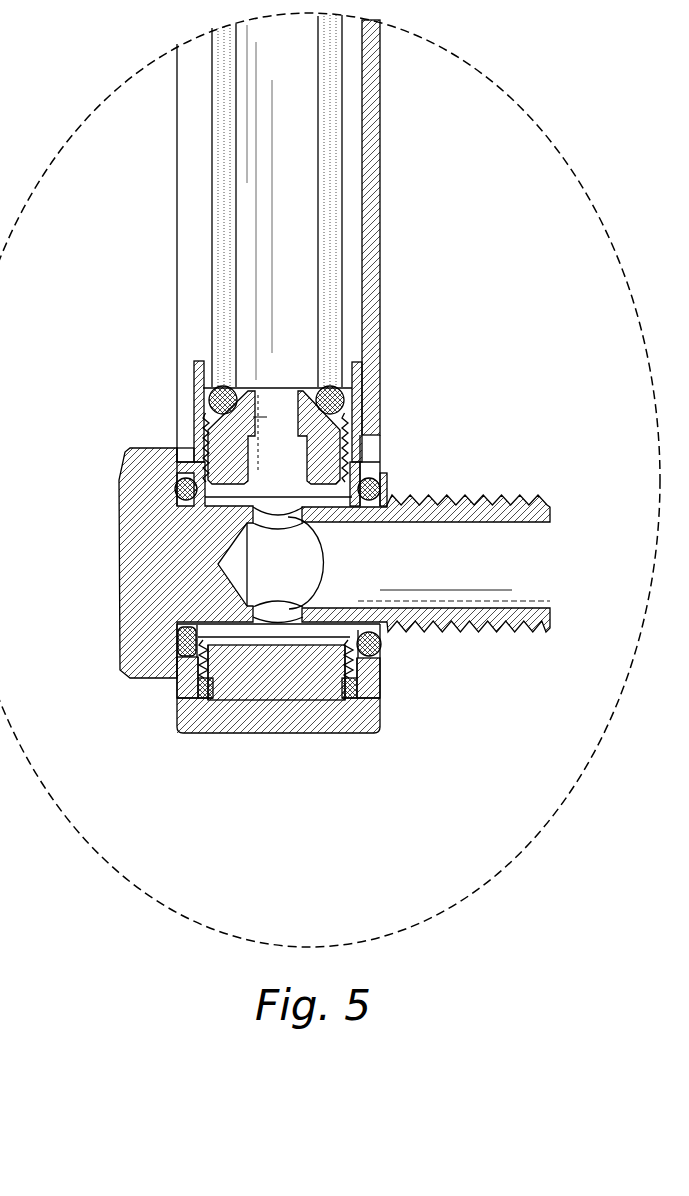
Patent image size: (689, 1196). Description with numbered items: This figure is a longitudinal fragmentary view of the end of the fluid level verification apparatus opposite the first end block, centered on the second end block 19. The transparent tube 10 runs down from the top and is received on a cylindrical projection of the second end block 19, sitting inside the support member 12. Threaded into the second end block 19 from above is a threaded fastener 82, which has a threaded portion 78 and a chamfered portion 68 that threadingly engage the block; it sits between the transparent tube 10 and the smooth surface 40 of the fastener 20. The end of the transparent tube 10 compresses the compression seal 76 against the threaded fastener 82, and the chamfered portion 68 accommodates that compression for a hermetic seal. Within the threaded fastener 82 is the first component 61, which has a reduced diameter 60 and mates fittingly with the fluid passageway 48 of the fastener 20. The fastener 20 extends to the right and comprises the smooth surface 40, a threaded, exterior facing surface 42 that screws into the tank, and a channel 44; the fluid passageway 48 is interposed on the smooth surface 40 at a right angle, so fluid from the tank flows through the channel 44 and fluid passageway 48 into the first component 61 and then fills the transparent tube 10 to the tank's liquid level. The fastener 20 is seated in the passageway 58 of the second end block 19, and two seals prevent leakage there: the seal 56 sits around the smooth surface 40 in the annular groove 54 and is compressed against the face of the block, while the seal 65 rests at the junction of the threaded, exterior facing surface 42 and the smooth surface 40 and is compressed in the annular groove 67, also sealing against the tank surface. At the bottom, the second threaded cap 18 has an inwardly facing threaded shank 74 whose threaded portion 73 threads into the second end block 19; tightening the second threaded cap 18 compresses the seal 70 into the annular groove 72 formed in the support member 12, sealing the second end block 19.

The transparent tube 10 is at (216, 171).
The support member 12 is at (378, 184).
The second threaded cap 18 is at (230, 733).
The second end block 19 is at (199, 362).
The fastener 20 is at (119, 543).
The smooth surface 40 is at (332, 508).
The threaded, exterior facing surface 42 is at (510, 634).
The channel 44 is at (540, 580).
The fluid passageway 48 is at (293, 600).
The annular groove 54 is at (143, 677).
The seal 56 is at (180, 634).
The passageway 58 is at (215, 625).
The reduced diameter 60 is at (258, 412).
The first component 61 is at (265, 437).
The seal 65 is at (381, 642).
The annular groove 67 is at (368, 655).
The chamfered portion 68 is at (357, 392).
The seal 70 is at (200, 695).
The annular groove 72 is at (213, 698).
The threaded portion 73 is at (338, 660).
The threaded shank 74 is at (221, 659).
The compression seal 76 is at (222, 386).
The threaded portion 78 is at (207, 448).
The threaded fastener 82 is at (332, 436).